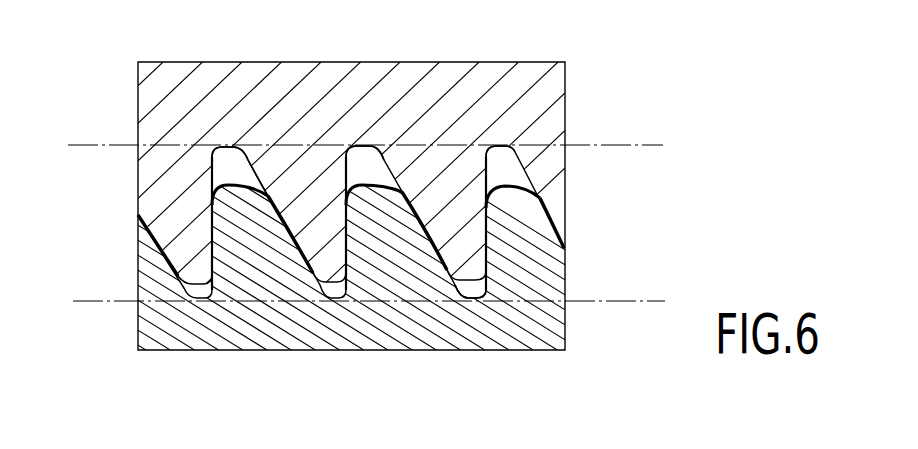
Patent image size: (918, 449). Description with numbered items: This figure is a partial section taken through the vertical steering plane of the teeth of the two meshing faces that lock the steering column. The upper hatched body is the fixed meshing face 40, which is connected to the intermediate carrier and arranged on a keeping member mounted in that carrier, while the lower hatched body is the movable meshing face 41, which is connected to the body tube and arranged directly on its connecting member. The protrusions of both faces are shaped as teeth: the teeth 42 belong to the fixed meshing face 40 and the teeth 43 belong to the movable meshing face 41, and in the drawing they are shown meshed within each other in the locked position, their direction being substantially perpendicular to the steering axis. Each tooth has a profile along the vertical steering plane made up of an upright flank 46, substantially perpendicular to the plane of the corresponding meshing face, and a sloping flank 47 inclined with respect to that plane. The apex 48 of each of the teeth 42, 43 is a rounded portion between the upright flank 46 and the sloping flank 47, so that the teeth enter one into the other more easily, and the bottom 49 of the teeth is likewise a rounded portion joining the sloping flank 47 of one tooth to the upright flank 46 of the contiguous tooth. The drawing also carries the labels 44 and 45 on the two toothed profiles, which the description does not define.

The fixed meshing face 40 is at (637, 144).
The movable meshing face 41 is at (650, 301).
The teeth 42 is at (447, 195).
The teeth 43 is at (392, 262).
The thread of first part 44 is at (346, 173).
The thread of second part 45 is at (300, 254).
The upright flank 46 is at (208, 173).
The sloping flank 47 is at (247, 162).
The apex 48 is at (517, 172).
The bottom 49 is at (367, 147).